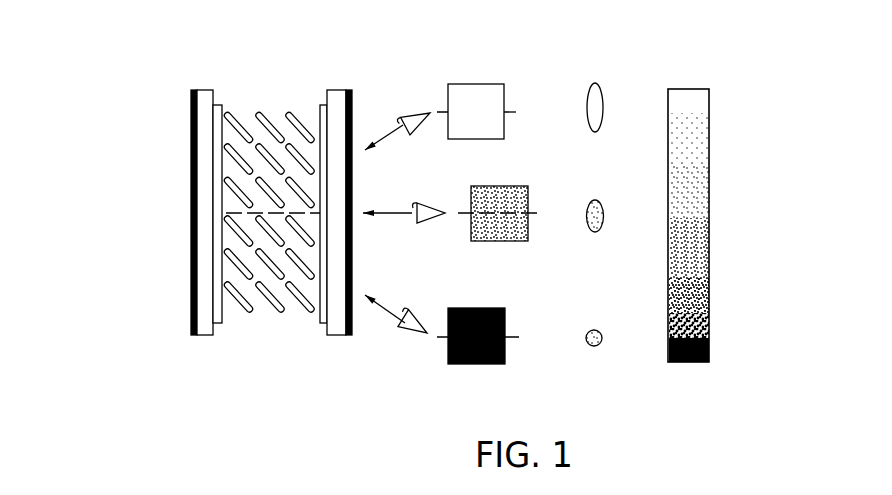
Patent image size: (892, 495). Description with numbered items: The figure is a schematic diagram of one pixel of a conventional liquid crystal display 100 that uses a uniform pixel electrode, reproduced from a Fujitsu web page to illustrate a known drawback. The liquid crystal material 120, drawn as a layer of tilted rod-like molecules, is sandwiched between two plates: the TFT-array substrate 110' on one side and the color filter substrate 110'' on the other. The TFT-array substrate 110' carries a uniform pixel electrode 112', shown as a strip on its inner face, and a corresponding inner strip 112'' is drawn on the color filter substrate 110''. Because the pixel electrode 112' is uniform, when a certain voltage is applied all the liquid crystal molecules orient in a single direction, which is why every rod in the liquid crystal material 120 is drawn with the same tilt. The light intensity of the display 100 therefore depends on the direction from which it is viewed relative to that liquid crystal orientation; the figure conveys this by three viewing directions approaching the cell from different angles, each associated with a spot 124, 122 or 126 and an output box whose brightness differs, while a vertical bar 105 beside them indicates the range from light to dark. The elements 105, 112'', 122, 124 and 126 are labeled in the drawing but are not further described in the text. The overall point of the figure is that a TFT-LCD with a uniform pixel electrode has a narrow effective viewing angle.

The liquid crystal display 100 is at (153, 212).
The gray scale / brightness output bar 105 is at (748, 232).
The TFT-array substrate 110' is at (202, 178).
The color filter substrate 110'' is at (340, 178).
The uniform pixel electrode 112' is at (220, 244).
The second electrode / alignment layer 112'' is at (322, 244).
The liquid crystal material 120 is at (272, 118).
The intermediate viewing spot 122 is at (595, 232).
The wide viewing spot 124 is at (595, 83).
The narrow viewing spot 126 is at (594, 346).